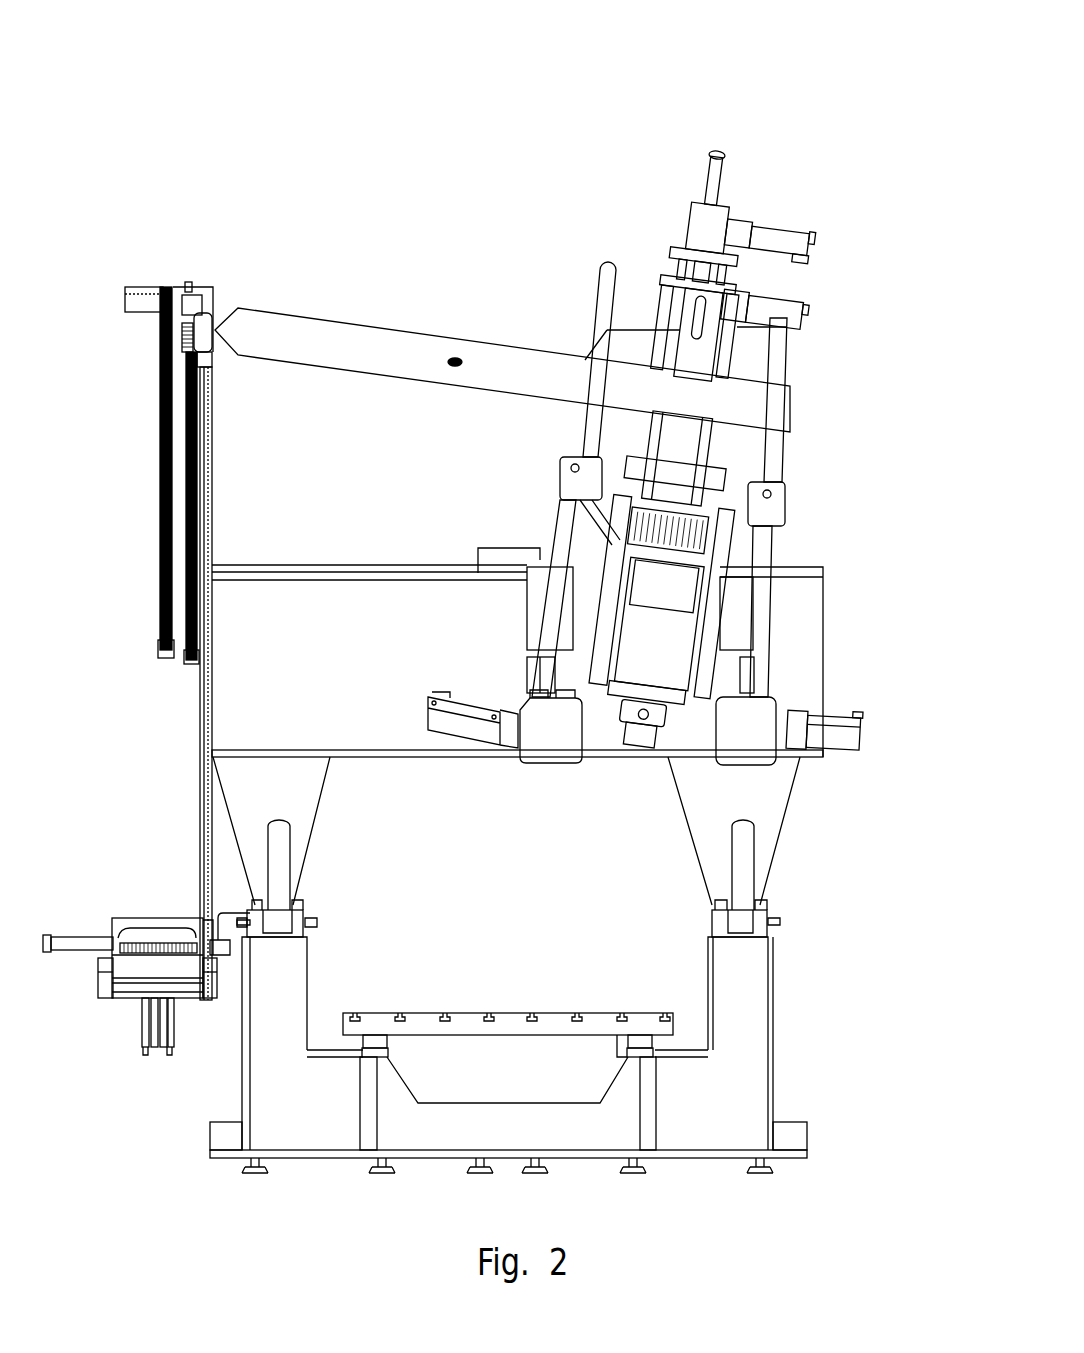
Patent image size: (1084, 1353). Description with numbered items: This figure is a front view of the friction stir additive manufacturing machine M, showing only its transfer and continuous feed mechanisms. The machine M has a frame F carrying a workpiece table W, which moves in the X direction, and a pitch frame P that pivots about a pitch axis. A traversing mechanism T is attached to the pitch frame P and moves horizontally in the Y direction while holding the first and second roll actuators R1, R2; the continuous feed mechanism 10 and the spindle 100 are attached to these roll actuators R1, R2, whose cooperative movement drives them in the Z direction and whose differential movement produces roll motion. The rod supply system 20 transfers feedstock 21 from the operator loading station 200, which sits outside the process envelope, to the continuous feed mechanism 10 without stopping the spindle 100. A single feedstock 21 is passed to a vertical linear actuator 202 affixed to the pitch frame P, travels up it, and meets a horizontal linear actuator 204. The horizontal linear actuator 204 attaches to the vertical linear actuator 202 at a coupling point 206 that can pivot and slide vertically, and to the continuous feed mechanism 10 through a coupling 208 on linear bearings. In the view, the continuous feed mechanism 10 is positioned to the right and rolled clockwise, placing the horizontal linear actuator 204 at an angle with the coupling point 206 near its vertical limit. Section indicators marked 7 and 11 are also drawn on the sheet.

The continuous feed mechanism 10 is at (703, 460).
The rod supply system 20 is at (142, 269).
The feedstock 21 is at (168, 918).
The spindle 100 is at (630, 760).
The operator loading station 200 is at (146, 904).
The vertical linear actuator 202 is at (205, 435).
The horizontal linear actuator 204 is at (430, 345).
The coupling point 206 is at (185, 342).
The coupling 208 is at (780, 385).
The friction stir additive manufacturing machine M is at (878, 357).
The traversing mechanism T is at (720, 678).
The first roll actuator R1 is at (550, 745).
The second roll actuator R2 is at (740, 745).
The pitch frame P is at (300, 800).
The workpiece table W is at (462, 1008).
The frame F is at (752, 1075).
The section line of FIG. 7 is at (740, 97).
The section line of FIG. 11 is at (578, 832).